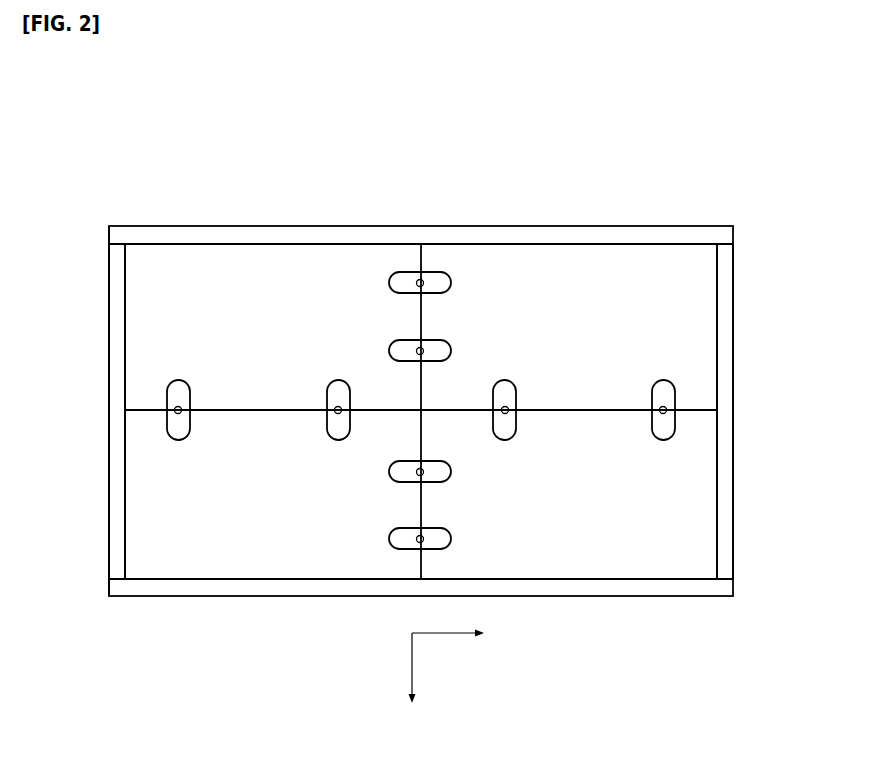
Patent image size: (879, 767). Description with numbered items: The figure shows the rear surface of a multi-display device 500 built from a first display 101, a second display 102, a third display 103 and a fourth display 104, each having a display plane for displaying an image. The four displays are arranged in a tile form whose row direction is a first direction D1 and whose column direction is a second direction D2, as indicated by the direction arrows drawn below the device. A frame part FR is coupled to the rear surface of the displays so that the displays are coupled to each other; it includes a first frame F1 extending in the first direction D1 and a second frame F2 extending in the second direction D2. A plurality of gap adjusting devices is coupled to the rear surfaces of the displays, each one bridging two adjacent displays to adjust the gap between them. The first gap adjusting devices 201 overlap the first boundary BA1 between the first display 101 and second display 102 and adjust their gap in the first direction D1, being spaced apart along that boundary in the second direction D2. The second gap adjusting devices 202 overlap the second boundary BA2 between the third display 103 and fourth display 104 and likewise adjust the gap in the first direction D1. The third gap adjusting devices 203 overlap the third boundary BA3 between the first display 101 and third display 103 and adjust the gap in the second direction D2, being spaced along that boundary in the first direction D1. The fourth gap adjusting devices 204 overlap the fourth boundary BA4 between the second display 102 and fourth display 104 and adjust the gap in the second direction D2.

The multi-display device 500 is at (727, 191).
The frame part FR is at (150, 152).
The first frame F1 is at (150, 236).
The second frame F2 is at (106, 256).
The first display 101 is at (685, 336).
The second display 102 is at (158, 336).
The third display 103 is at (685, 513).
The fourth display 104 is at (158, 513).
The first gap adjusting devices 201 is at (452, 283).
The second gap adjusting devices 202 is at (452, 472).
The third gap adjusting devices 203 is at (505, 380).
The fourth gap adjusting devices 204 is at (180, 380).
The first boundary BA1 is at (420, 318).
The second boundary BA2 is at (420, 505).
The third boundary BA3 is at (584, 410).
The fourth boundary BA4 is at (258, 410).
The first direction D1 is at (462, 632).
The second direction D2 is at (410, 683).